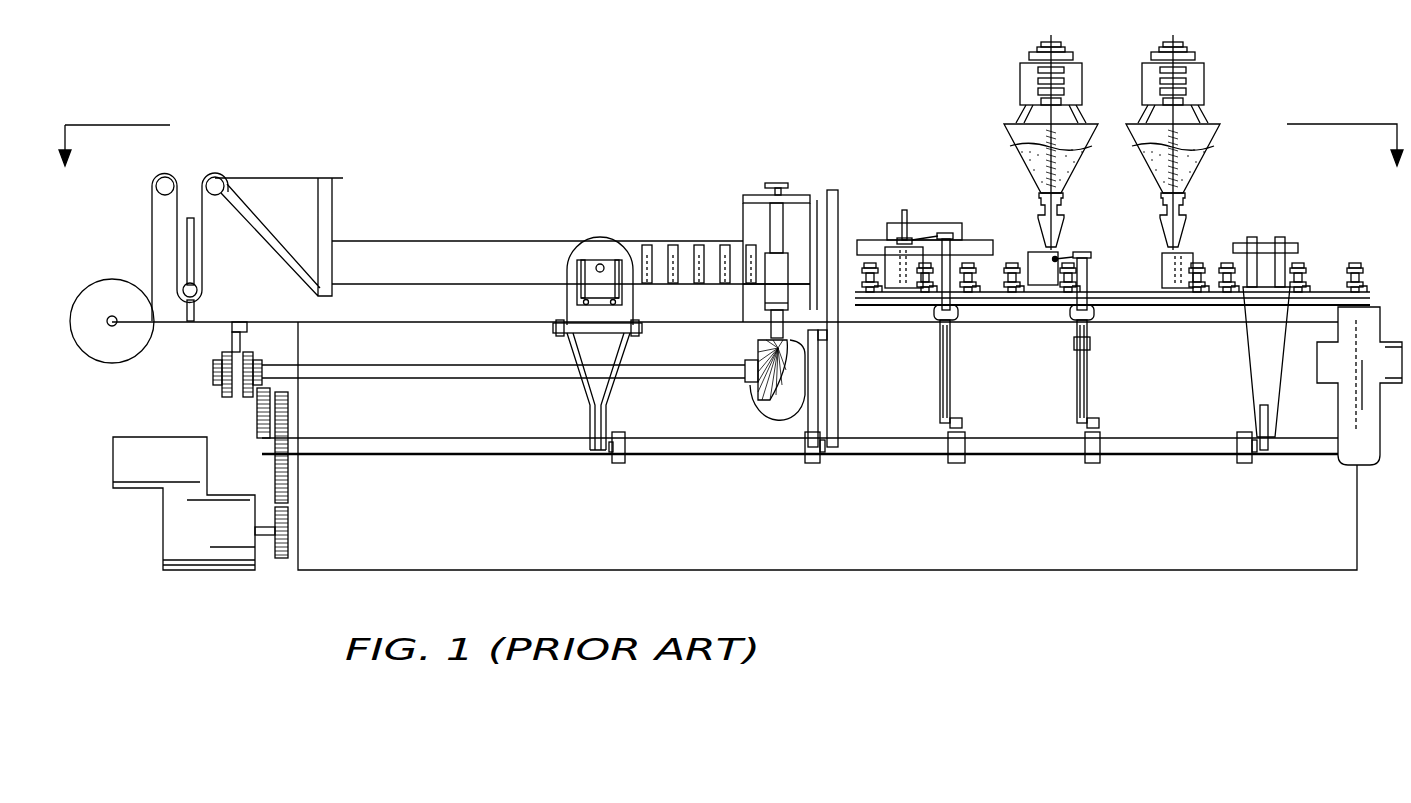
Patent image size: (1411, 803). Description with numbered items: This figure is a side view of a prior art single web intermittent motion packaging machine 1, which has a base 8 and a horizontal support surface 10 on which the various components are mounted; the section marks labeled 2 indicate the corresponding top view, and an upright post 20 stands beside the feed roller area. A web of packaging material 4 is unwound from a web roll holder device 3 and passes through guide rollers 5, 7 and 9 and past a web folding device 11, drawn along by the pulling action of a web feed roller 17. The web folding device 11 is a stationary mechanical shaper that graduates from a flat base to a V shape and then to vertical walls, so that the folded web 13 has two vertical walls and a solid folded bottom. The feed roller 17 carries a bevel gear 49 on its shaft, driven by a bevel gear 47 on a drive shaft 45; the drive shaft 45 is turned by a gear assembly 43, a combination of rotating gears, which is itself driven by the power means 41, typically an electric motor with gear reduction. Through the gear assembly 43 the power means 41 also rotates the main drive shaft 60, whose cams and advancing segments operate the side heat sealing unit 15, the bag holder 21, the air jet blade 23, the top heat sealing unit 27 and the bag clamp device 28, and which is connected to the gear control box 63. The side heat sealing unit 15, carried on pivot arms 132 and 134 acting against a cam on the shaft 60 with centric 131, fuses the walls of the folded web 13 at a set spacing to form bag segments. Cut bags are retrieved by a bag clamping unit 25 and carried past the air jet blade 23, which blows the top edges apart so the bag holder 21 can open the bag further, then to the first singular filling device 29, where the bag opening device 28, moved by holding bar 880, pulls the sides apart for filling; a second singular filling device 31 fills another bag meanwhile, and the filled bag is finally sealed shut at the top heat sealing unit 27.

The packaging machine 1 is at (648, 155).
The section line for FIG. 2 is at (730, 159).
The web roll holder device 3 is at (108, 318).
The web 4 is at (92, 340).
The guide roller 5 is at (171, 180).
The guide roller 7 is at (197, 294).
The base 8 is at (338, 572).
The guide roller 9 is at (219, 196).
The horizontal support surface 10 is at (186, 324).
The web folding device 11 is at (262, 215).
The folded web 13 is at (428, 248).
The side heat sealing unit 15 is at (604, 237).
The web feed roller 17 is at (775, 265).
The upright post 20 is at (833, 200).
The bag holder 21 is at (920, 232).
The air jet blade 23 is at (980, 243).
The bag clamping unit 25 is at (877, 292).
The top heat sealing unit 27 is at (1265, 240).
The bag opening device 28 is at (1090, 255).
The first singular filling device 29 is at (1088, 134).
The second singular filling device 31 is at (1205, 147).
The power means 41 is at (176, 545).
The gear assembly 43 is at (290, 425).
The drive shaft 45 is at (440, 383).
The bevel gear 47 is at (753, 388).
The bevel gear 49 is at (790, 375).
The main drive shaft 60 is at (681, 452).
The gear control box 63 is at (1370, 395).
The centric 131 is at (905, 283).
The pivot arm 132 is at (586, 396).
The pivot arm 134 is at (611, 396).
The holding bar 880 is at (1060, 255).